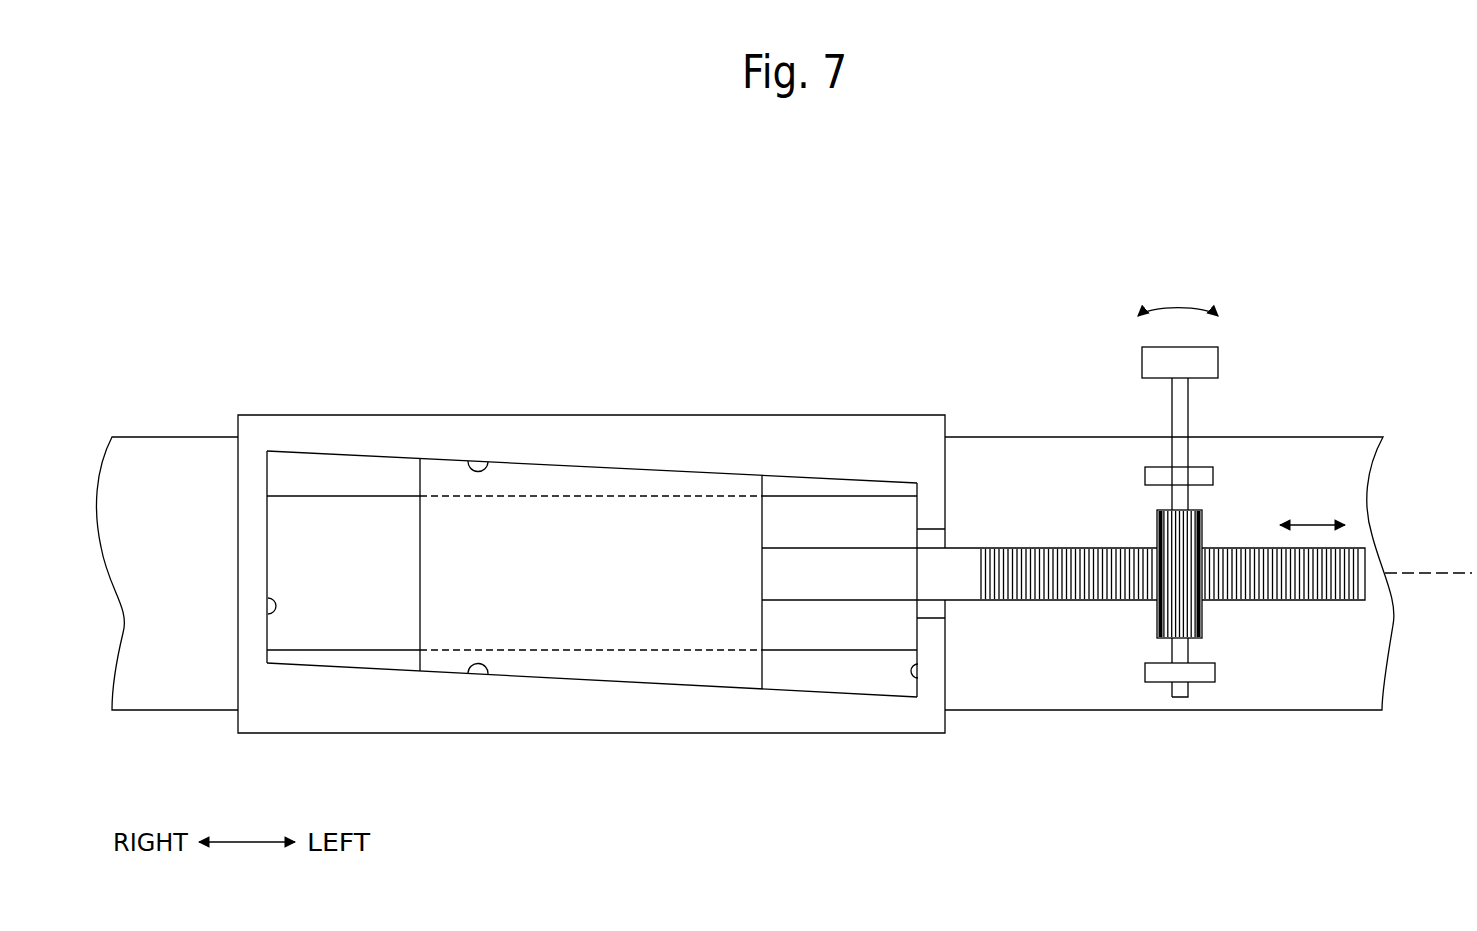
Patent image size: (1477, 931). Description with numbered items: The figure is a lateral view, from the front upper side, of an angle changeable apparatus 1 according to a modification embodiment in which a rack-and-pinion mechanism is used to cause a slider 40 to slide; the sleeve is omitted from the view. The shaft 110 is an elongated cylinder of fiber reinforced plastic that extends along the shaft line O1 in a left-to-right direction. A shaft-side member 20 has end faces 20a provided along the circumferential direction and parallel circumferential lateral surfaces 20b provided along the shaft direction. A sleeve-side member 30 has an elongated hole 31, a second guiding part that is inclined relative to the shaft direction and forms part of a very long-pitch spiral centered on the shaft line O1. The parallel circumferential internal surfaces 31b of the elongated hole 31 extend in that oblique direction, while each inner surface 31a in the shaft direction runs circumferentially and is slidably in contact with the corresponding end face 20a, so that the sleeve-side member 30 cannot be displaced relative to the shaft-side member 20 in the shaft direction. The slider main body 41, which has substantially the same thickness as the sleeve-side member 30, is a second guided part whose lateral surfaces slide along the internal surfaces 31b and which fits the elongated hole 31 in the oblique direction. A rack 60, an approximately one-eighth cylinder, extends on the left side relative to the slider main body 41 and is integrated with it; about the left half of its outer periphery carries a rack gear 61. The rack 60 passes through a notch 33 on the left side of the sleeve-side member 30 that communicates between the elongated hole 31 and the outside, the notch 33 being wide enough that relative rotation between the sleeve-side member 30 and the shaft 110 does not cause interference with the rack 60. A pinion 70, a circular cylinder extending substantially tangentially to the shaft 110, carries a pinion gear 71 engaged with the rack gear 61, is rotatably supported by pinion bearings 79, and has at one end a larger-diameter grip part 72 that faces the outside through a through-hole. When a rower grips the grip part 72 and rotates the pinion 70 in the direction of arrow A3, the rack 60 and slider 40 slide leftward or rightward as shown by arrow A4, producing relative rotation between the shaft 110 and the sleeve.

The angle changeable apparatus 1 is at (750, 208).
The shaft 110 is at (1011, 716).
The sleeve-side member 30 is at (330, 410).
The elongated hole 31 is at (388, 669).
The inner surface 31a is at (268, 614).
The circumferential internal surface 31b is at (478, 461).
The slider 40 is at (613, 463).
The slider main body 41 is at (558, 660).
The shaft-side member 20 is at (847, 656).
The end face 20a is at (267, 562).
The circumferential lateral surface 20b is at (828, 496).
The notch 33 is at (928, 540).
The rack 60 is at (1105, 606).
The rack gear 61 is at (1290, 590).
The pinion 70 is at (1192, 421).
The pinion gear 71 is at (1203, 528).
The grip part 72 is at (1218, 358).
The pinion bearing 79 is at (1158, 476).
The arrow A3 is at (1176, 298).
The arrow A4 is at (1317, 520).
The shaft line O1 is at (1429, 557).